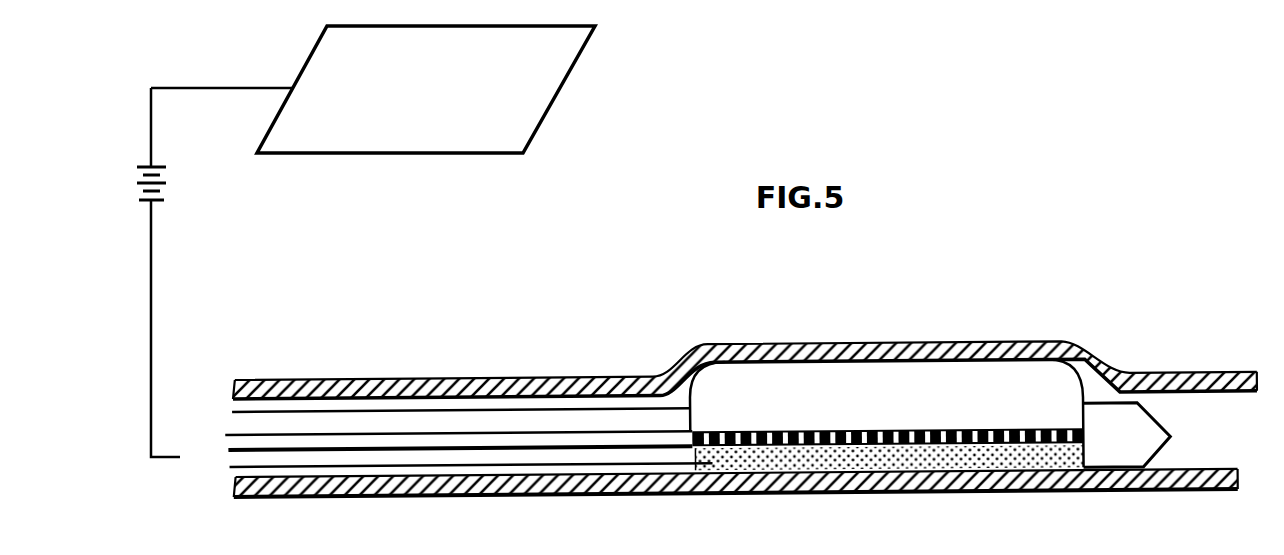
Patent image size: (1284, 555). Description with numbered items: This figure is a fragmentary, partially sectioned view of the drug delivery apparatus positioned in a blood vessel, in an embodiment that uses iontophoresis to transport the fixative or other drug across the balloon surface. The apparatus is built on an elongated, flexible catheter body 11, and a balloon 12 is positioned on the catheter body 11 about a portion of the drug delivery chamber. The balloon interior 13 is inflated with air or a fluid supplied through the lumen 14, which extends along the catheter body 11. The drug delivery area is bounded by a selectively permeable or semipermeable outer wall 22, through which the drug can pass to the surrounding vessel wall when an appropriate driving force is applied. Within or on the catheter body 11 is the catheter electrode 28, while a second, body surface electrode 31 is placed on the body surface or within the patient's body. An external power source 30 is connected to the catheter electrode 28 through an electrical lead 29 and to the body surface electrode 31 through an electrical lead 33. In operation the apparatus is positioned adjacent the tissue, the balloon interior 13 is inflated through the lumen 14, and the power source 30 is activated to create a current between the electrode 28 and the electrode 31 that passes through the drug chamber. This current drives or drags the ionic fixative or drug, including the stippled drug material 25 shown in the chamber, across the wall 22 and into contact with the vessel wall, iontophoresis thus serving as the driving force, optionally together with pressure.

The catheter body 11 is at (592, 412).
The balloon 12 is at (1093, 345).
The balloon interior 13 is at (992, 378).
The lumen 14 is at (388, 440).
The outer wall 22 is at (942, 480).
The drug reservoir 25 is at (898, 460).
The catheter electrode 28 is at (1007, 437).
The electrical lead 29 is at (153, 336).
The external power source 30 is at (158, 195).
The body surface electrode 31 is at (577, 63).
The electrical lead 33 is at (201, 88).